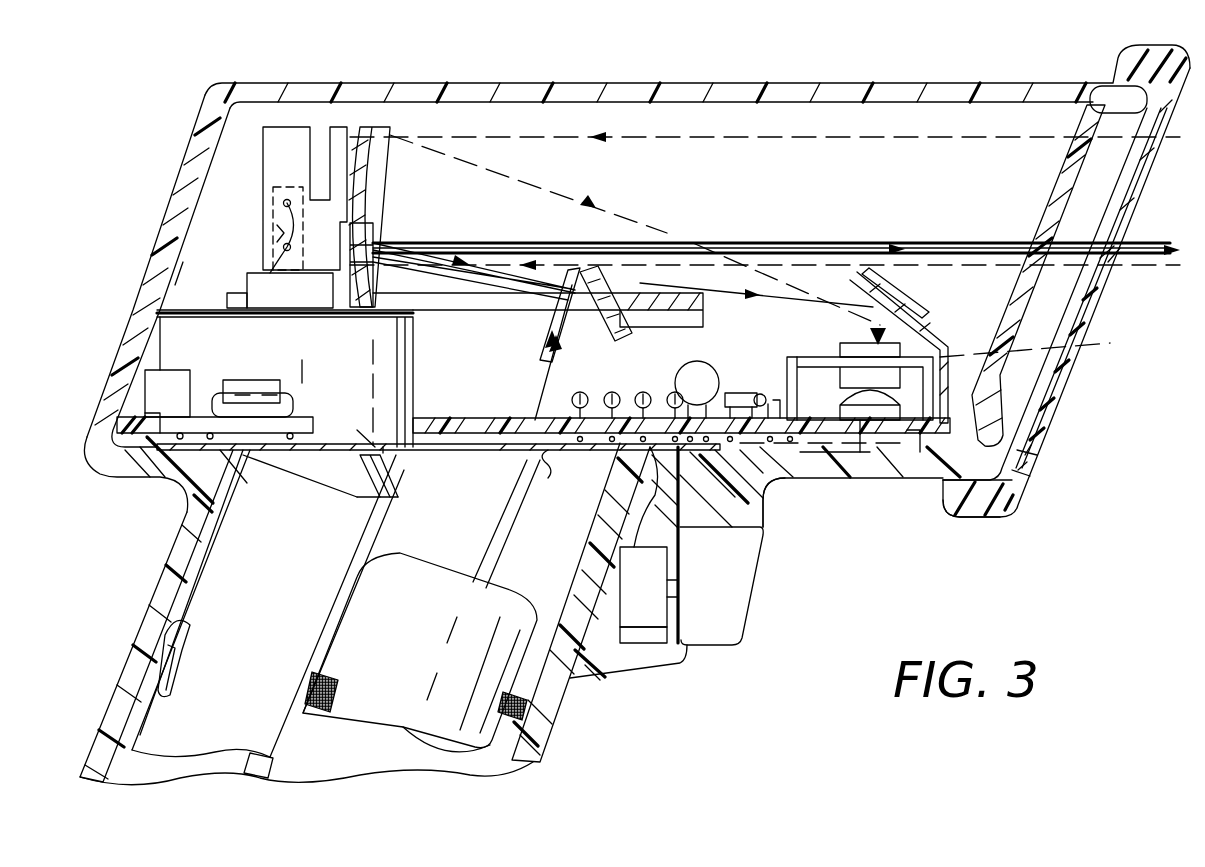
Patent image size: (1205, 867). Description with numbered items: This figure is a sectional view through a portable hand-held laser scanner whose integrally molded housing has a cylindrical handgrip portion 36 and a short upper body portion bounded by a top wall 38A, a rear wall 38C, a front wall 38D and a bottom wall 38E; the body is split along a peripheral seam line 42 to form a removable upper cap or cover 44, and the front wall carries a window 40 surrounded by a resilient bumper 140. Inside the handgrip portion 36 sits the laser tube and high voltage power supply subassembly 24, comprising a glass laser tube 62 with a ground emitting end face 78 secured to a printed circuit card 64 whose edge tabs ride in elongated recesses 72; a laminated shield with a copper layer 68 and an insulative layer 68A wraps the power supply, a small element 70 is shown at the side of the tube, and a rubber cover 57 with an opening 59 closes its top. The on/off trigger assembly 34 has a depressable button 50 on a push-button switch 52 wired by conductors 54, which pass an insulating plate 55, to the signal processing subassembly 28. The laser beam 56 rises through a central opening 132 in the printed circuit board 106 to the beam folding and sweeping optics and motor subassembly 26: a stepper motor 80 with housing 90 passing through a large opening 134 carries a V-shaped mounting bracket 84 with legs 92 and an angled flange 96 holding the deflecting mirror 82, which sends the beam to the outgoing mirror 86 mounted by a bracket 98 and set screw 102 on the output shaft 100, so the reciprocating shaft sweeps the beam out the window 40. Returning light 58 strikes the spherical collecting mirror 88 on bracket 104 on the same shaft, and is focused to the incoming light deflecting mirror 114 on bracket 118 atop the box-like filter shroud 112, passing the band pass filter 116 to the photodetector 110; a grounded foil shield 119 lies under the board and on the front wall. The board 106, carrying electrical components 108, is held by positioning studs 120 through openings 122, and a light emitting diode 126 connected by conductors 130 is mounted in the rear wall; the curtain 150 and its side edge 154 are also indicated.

The laser tube and associated high voltage power supply subassembly 24 is at (323, 592).
The beam folding and sweeping optics and motor subassembly 26 is at (355, 372).
The photodetector and associated amplification and signal processing circuitry subas 28 is at (418, 417).
The on/off trigger assembly 34 is at (722, 650).
The handgrip portion 36 is at (136, 633).
The top wall 38A is at (640, 84).
The rear wall 38C is at (100, 358).
The front wall 38D is at (992, 373).
The bottom wall 38E is at (975, 488).
The window 40 is at (1070, 187).
The peripheral seam line 42 is at (187, 277).
The upper cap or cover 44 is at (160, 245).
The depressable button 50 is at (738, 566).
The push-button electrical switch 52 is at (653, 612).
The conductors 54 is at (648, 495).
The plate 55 is at (752, 490).
The exiting laser beam path 56 is at (1108, 262).
The rubber cover 57 is at (563, 681).
The return light path 58 is at (690, 245).
The opening 59 is at (499, 524).
The laser tube 62 is at (372, 714).
The printed circuit board or card 64 is at (373, 497).
The copper layer of shield 68 is at (190, 620).
The insulative layer of shield 68A is at (185, 657).
The contact pad 70 is at (337, 678).
The elongated recesses 72 is at (382, 471).
The laser light emitting end face 78 is at (557, 480).
The motor 80 is at (405, 332).
The deflecting mirror 82 is at (600, 327).
The mounting bracket 84 is at (497, 288).
The beam sweeping (outgoing) mirror 86 is at (368, 233).
The receiving (collecting) mirror 88 is at (380, 187).
The motor housing 90 is at (300, 474).
The legs 92 is at (227, 301).
The angled flange 96 is at (625, 322).
The bracket 98 is at (272, 253).
The output shaft 100 is at (277, 233).
The set screw 102 is at (286, 200).
The bracket 104 is at (290, 133).
The printed circuit board 106 is at (800, 456).
The electrical components 108 is at (712, 381).
The photodetector 110 is at (878, 432).
The filter shroud and mounting bracket subassembly 112 is at (845, 355).
The incoming light deflecting mirror 114 is at (910, 310).
The band pass filter 116 is at (865, 394).
The bracket 118 is at (930, 340).
The grounded shield 119 is at (1085, 348).
The positioning studs 120 is at (150, 463).
The openings 122 is at (160, 415).
The light emitting diode 126 is at (117, 340).
The conductors 130 is at (160, 341).
The central opening 132 is at (523, 440).
The large opening 134 is at (382, 447).
The bumper 140 is at (1010, 508).
The curtain 150 is at (1040, 440).
The side edge 154 is at (1118, 220).